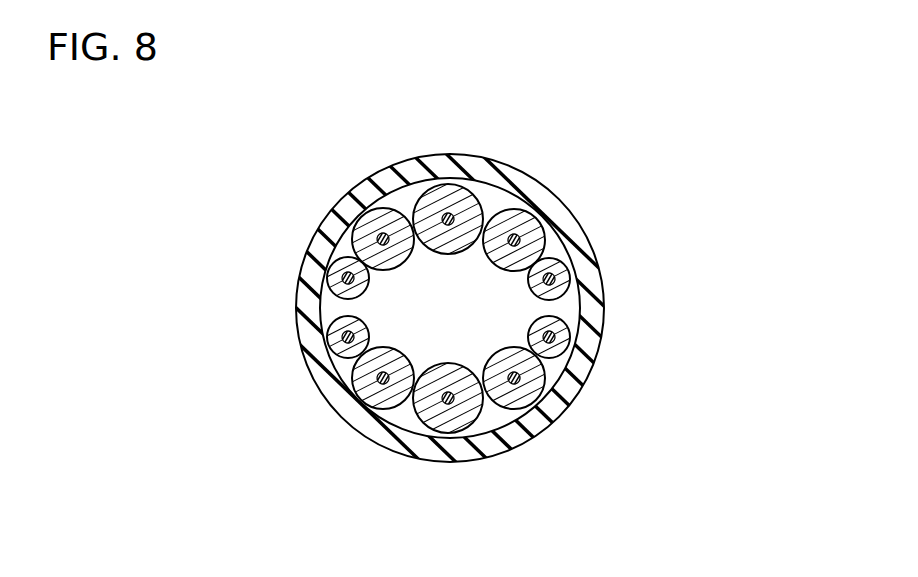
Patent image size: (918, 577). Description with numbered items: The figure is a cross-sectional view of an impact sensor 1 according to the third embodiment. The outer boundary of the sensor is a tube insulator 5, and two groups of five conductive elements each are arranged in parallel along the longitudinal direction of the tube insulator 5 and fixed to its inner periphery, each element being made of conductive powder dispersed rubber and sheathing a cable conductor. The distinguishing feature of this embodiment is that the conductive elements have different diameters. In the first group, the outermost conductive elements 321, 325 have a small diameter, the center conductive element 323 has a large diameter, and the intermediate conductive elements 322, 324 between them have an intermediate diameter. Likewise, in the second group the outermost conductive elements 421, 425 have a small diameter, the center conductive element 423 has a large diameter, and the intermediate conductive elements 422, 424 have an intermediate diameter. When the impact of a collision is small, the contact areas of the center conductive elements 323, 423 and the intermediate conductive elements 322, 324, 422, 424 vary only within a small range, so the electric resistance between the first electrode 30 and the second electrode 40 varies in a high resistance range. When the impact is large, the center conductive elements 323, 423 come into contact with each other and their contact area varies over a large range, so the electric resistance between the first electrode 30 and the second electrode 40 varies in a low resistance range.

The impact sensor 1 is at (673, 208).
The tube insulator 5 is at (585, 345).
The first electrode 30 is at (560, 133).
The second electrode 40 is at (558, 487).
The outermost conductive element 321 is at (334, 264).
The intermediate conductive element 322 is at (380, 208).
The center conductive element 323 is at (448, 184).
The intermediate conductive element 324 is at (513, 209).
The outermost conductive element 325 is at (563, 264).
The outermost conductive element 421 is at (334, 351).
The intermediate conductive element 422 is at (381, 408).
The center conductive element 423 is at (448, 434).
The intermediate conductive element 424 is at (513, 410).
The outermost conductive element 425 is at (563, 353).